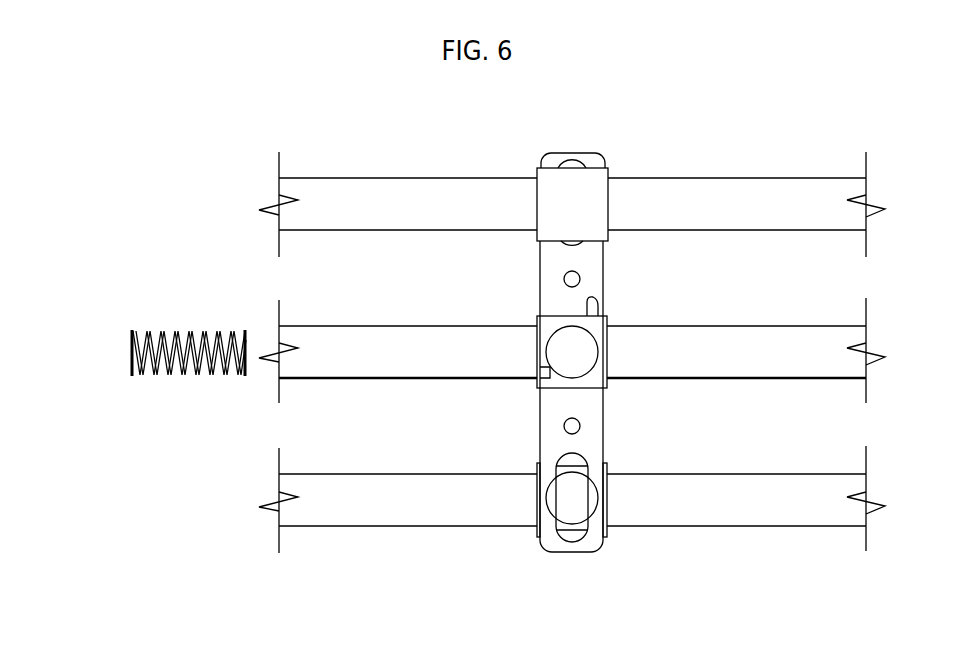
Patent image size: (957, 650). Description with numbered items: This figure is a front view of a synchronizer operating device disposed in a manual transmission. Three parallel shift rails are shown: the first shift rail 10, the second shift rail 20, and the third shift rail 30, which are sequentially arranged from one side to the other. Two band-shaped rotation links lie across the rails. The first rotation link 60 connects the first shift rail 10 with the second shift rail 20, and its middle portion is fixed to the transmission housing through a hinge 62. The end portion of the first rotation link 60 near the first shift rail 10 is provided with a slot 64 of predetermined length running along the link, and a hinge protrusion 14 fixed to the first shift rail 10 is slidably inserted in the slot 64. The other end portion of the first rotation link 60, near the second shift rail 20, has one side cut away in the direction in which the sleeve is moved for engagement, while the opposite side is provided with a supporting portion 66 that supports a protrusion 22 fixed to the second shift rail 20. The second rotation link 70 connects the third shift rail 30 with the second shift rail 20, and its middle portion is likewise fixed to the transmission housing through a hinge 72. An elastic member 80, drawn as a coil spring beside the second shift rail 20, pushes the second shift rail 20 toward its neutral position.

The first shift rail 10 is at (770, 474).
The hinge protrusion 14 is at (560, 505).
The second shift rail 20 is at (770, 326).
The protrusion 22 is at (560, 368).
The third shift rail 30 is at (770, 178).
The first rotation link 60 is at (632, 403).
The hinge 62 is at (563, 427).
The slot 64 is at (572, 544).
The supporting portion 66 is at (599, 303).
The second rotation link 70 is at (632, 265).
The hinge 72 is at (563, 279).
The elastic member 80 is at (160, 330).